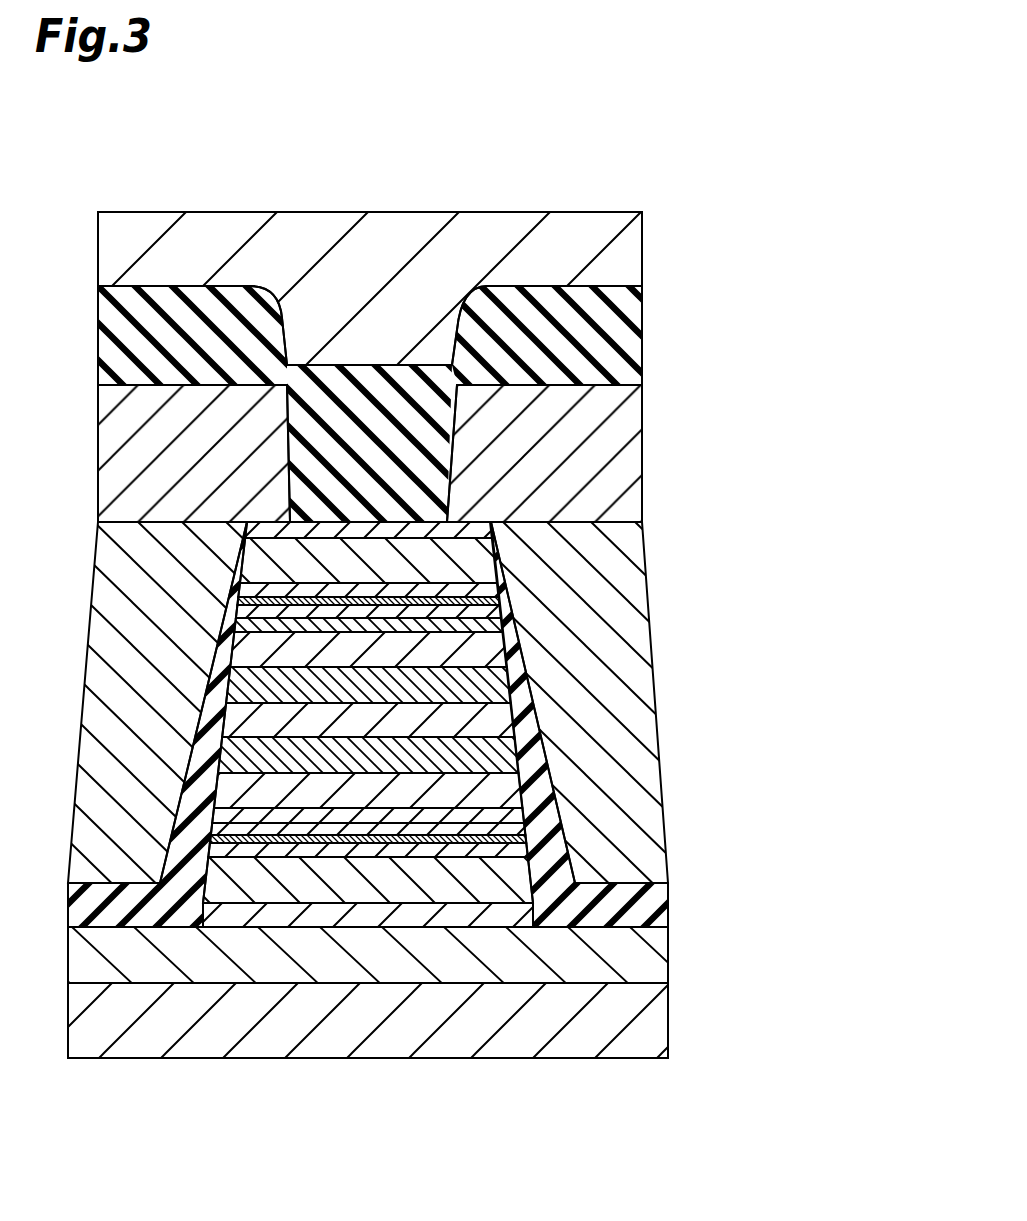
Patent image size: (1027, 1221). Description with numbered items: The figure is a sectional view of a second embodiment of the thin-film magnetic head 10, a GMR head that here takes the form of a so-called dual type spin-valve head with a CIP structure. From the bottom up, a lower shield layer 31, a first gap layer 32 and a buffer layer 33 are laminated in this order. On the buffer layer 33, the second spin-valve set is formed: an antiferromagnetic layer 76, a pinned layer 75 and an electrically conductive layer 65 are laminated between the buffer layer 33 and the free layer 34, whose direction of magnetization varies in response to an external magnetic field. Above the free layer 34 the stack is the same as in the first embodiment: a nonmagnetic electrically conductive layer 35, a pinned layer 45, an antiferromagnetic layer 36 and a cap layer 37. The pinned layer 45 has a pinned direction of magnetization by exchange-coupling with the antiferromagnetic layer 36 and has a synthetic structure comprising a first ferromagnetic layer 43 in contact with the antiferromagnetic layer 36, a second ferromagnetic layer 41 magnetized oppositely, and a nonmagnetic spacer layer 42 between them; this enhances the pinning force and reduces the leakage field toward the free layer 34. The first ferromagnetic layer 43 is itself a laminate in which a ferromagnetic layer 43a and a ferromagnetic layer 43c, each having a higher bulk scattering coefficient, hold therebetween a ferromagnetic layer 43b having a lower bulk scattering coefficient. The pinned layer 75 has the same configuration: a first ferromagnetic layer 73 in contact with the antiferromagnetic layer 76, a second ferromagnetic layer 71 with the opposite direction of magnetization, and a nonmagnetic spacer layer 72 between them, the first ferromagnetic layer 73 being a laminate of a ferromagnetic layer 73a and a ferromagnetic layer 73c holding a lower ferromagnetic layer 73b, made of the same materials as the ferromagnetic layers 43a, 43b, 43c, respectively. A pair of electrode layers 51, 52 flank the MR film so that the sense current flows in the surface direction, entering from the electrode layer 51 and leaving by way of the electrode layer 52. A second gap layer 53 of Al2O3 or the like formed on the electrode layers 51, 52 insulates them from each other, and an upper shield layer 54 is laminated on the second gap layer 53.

The thin-film magnetic head 10 is at (657, 135).
The lower shield layer 31 is at (652, 1021).
The first gap layer 32 is at (658, 960).
The buffer layer 33 is at (668, 918).
The free layer 34 is at (512, 720).
The nonmagnetic electrically conductive layer 35 is at (508, 685).
The antiferromagnetic layer 36 is at (494, 561).
The cap layer 37 is at (489, 533).
The second ferromagnetic layer 41 is at (504, 650).
The nonmagnetic spacer layer 42 is at (502, 625).
The first ferromagnetic layer 43 is at (531, 605).
The ferromagnetic layer (second layer) 43a is at (500, 612).
The ferromagnetic layer (first layer) 43b is at (499, 601).
The ferromagnetic layer (third layer) 43c is at (498, 590).
The pinned layer 45 is at (560, 577).
The electrode layer 51 is at (108, 446).
The electrode layer 52 is at (632, 441).
The second gap layer 53 is at (632, 326).
The upper shield layer 54 is at (632, 243).
The electrically conductive layer 65 is at (538, 746).
The second ferromagnetic layer 71 is at (516, 755).
The nonmagnetic spacer layer 72 is at (520, 790).
The first ferromagnetic layer 73 is at (517, 854).
The ferromagnetic layer (second layer) 73a is at (523, 815).
The lower ferromagnetic layer (first layer) 73b is at (524, 829).
The ferromagnetic layer (third layer) 73c is at (526, 848).
The pinned layer 75 is at (546, 818).
The antiferromagnetic layer 76 is at (572, 884).